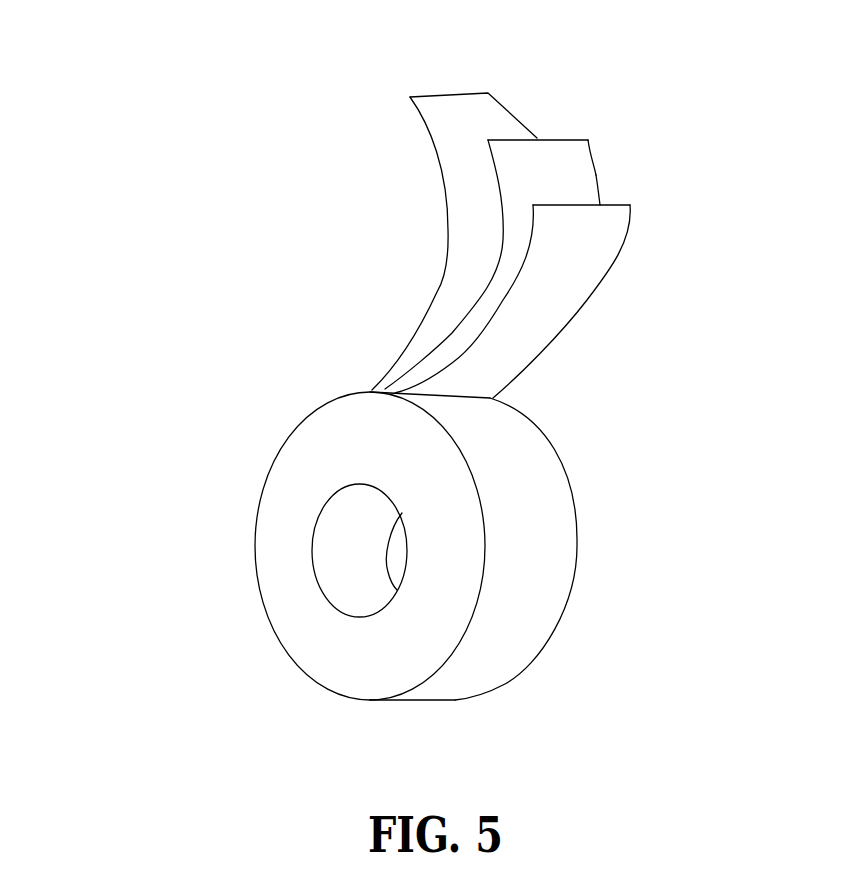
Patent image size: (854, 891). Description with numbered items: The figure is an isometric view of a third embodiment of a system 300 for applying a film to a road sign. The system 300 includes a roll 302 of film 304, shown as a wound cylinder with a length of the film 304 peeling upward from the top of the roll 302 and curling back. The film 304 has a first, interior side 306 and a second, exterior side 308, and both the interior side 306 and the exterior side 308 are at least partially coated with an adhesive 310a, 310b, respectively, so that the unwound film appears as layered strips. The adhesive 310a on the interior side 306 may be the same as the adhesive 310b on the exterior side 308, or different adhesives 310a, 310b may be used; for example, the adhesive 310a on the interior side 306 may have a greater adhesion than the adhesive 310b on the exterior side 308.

The system 300 is at (127, 206).
The roll 302 is at (303, 632).
The film 304 is at (587, 149).
The interior side 306 is at (593, 181).
The exterior side 308 is at (565, 139).
The adhesive 310a is at (611, 244).
The adhesive 310b is at (488, 96).